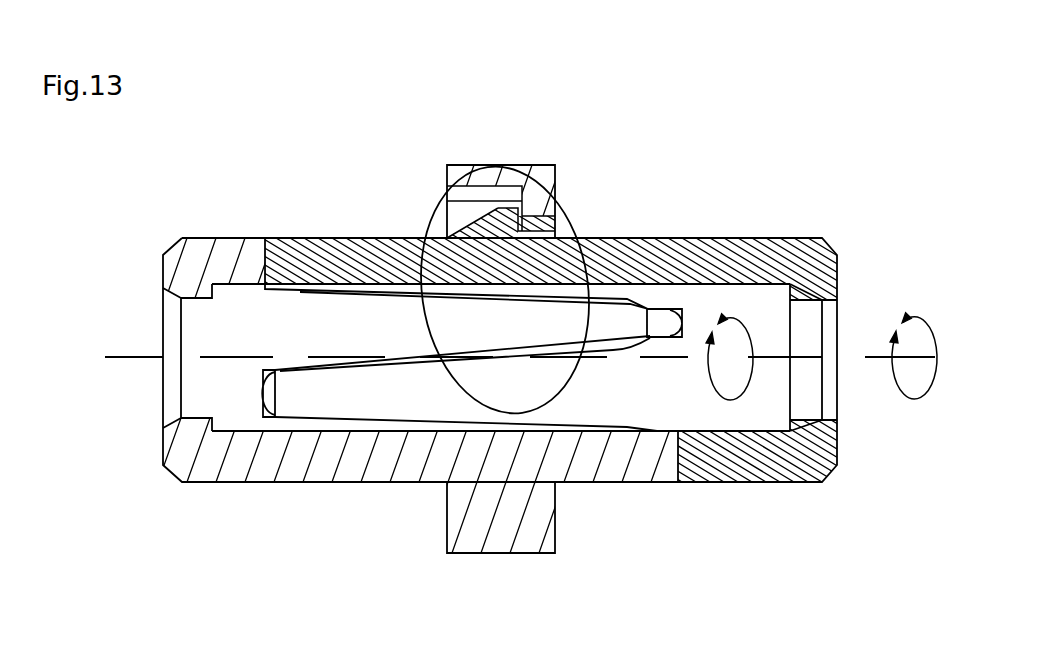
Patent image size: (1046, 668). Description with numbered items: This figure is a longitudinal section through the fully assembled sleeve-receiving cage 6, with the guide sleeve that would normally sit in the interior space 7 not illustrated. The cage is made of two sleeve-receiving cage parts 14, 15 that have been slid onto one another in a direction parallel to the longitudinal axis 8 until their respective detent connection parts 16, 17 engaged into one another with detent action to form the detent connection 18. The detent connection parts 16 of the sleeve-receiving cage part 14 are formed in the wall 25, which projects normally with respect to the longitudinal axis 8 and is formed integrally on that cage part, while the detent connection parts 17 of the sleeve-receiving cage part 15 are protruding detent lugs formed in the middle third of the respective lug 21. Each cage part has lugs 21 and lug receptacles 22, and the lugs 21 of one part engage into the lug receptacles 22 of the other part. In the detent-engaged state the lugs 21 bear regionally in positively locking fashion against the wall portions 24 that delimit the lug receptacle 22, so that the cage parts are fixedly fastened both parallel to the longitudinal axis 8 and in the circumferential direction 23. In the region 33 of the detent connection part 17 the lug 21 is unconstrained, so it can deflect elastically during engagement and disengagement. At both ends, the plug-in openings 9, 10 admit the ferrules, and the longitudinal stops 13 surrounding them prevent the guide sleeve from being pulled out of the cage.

The sleeve-receiving cage 6 is at (400, 222).
The interior space 7 is at (625, 387).
The longitudinal axis 8 is at (212, 357).
The plug-in opening 9 is at (165, 388).
The plug-in opening 10 is at (822, 335).
The longitudinal stop 13 is at (214, 284).
The sleeve-receiving cage part 14 is at (333, 462).
The sleeve-receiving cage part 15 is at (793, 258).
The detent connection part 16 is at (522, 208).
The detent connection part 17 is at (505, 221).
The detent connection 18 is at (523, 193).
The lug 21 is at (385, 393).
The lug receptacle 22 is at (425, 398).
The circumferential direction 23 is at (746, 323).
The wall portion 24 is at (650, 338).
The wall 25 is at (530, 517).
The region 33 is at (580, 260).